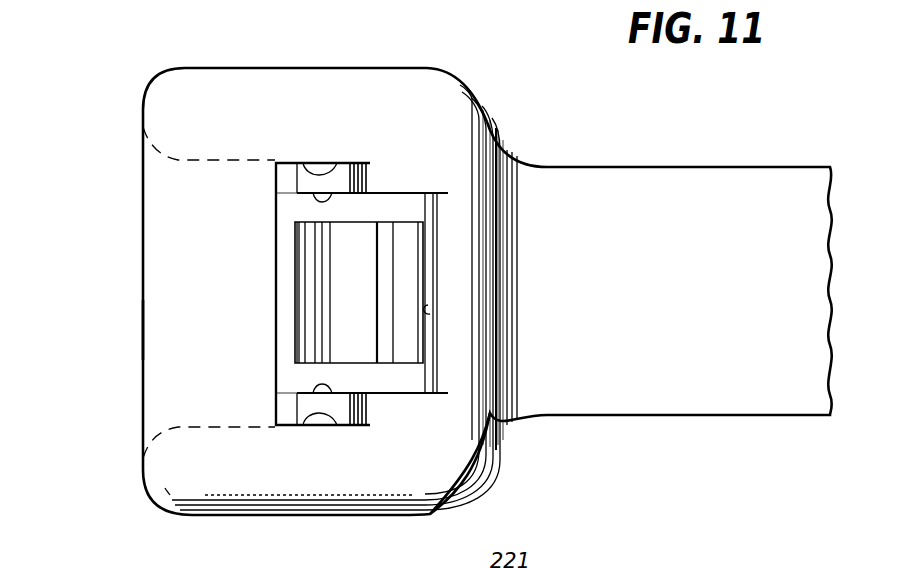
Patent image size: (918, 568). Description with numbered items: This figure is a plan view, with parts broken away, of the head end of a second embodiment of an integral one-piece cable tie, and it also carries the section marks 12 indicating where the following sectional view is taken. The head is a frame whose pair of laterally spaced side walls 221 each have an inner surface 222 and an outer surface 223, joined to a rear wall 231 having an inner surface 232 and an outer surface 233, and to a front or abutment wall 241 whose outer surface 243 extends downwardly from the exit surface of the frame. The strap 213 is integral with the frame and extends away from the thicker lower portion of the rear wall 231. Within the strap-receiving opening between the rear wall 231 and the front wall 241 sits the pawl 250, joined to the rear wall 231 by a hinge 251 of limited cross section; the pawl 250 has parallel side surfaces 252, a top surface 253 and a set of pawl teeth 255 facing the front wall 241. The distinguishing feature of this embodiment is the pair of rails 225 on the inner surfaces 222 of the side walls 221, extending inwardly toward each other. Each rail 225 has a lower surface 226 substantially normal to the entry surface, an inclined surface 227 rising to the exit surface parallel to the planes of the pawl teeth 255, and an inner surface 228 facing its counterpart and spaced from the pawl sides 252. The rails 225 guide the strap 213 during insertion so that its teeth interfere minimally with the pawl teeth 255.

The side wall 221 is at (339, 480).
The outer surface 223 is at (222, 517).
The outer surface 243 is at (143, 341).
The front wall 241 is at (185, 200).
The inner surface 222 is at (332, 160).
The lower surface 226 is at (297, 182).
The inclined surface 227 is at (313, 180).
The rail 225 is at (297, 193).
The inner surface 228 is at (333, 193).
The pawl 250 is at (392, 216).
The side surface 252 is at (367, 222).
The top surface 253 is at (342, 252).
The pawl teeth 255 is at (308, 290).
The hinge 251 is at (410, 270).
The rear wall 231 is at (450, 242).
The outer surface 233 is at (488, 297).
The inner surface 232 is at (430, 314).
The strap 213 is at (722, 278).
The section line 12 is at (55, 240).